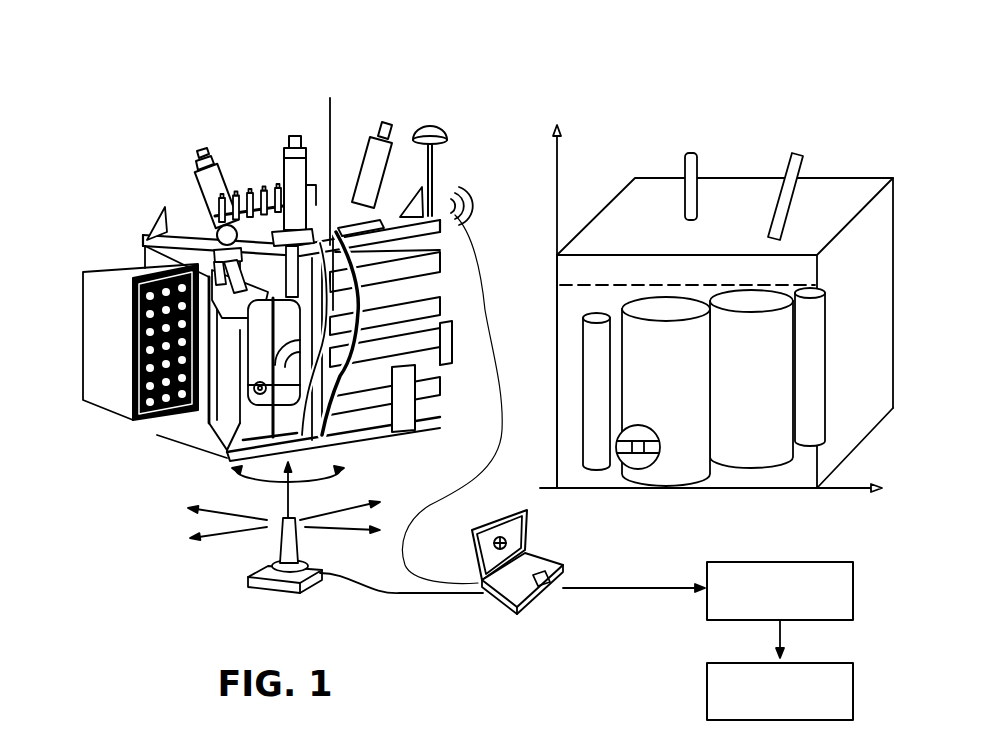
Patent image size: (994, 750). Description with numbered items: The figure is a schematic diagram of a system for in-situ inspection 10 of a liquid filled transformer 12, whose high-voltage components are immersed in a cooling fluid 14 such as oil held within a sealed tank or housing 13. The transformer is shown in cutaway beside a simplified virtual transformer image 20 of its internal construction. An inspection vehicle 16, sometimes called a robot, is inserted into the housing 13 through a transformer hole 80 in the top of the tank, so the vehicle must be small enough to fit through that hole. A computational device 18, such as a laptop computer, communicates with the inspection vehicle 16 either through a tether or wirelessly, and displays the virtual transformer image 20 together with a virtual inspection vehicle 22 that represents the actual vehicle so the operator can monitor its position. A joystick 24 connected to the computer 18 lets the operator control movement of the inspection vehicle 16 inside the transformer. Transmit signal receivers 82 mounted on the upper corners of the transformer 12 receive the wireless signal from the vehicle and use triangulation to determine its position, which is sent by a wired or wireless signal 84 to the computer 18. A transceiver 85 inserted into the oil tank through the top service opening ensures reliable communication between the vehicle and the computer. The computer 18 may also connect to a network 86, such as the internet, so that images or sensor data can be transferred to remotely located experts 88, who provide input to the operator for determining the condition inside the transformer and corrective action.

The system for in-situ inspection 10 is at (516, 101).
The transformer 12 is at (126, 418).
The housing 13 is at (251, 197).
The cooling fluid 14 is at (128, 292).
The inspection vehicle 16 is at (250, 404).
The computational device 18 is at (493, 597).
The virtual transformer image 20 is at (524, 540).
The virtual inspection vehicle 22 is at (637, 469).
The joystick 24 is at (247, 578).
The transformer hole 80 is at (327, 160).
The transmit signal receivers 82 is at (152, 237).
The signal 84 is at (470, 201).
The transceiver 85 is at (322, 434).
The network 86 is at (752, 562).
The experts 88 is at (826, 663).